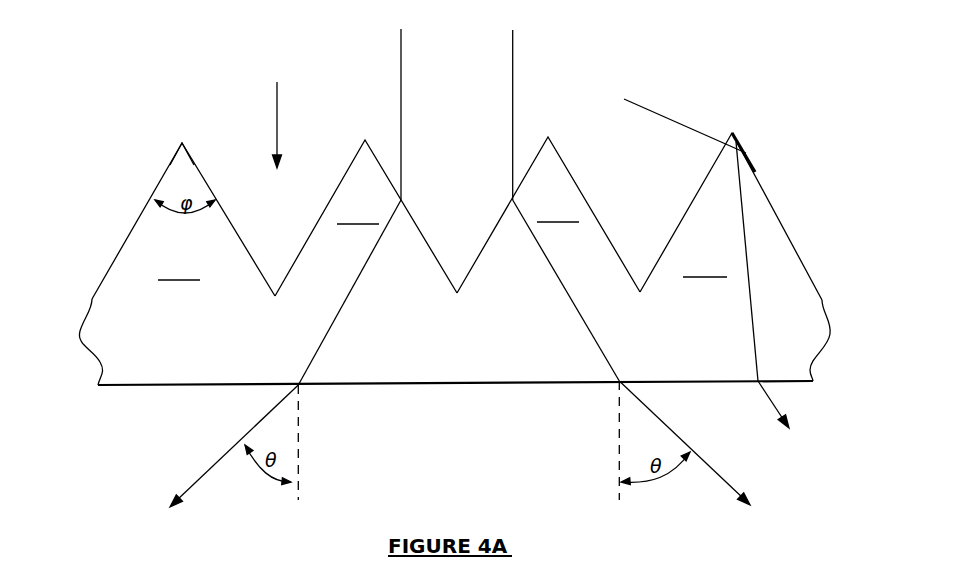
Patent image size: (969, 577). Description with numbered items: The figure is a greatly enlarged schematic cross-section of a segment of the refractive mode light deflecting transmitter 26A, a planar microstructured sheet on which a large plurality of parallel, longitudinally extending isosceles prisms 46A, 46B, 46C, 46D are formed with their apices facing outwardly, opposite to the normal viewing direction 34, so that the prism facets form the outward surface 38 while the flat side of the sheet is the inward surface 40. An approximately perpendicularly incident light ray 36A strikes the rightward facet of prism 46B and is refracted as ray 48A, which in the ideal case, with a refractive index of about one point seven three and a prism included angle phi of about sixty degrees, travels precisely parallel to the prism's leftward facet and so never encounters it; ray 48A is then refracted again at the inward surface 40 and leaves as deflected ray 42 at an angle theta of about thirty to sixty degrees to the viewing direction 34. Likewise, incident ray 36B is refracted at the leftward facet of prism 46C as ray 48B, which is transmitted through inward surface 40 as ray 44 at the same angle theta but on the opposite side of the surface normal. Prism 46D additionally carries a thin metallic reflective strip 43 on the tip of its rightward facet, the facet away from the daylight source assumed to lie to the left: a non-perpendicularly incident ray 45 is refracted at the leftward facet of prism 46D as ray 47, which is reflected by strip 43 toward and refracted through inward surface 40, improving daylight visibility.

The refractive mode light deflecting transmitter 26A is at (441, 259).
The normal viewing direction 34 is at (276, 127).
The incident light ray 36A is at (400, 77).
The incident light ray 36B is at (513, 79).
The outward surface 38 is at (166, 168).
The inward surface 40 is at (386, 401).
The deflected ray 42 is at (203, 475).
The reflective strip 43 is at (743, 152).
The deflected ray 44 is at (718, 473).
The non-perpendicularly incident ray 45 is at (657, 113).
The isosceles prism 46A is at (183, 221).
The isosceles prism 46B is at (366, 218).
The isosceles prism 46C is at (548, 215).
The isosceles prism 46D is at (731, 216).
The refracted ray 47 is at (734, 142).
The refracted ray 48A is at (342, 307).
The refracted ray 48B is at (587, 323).